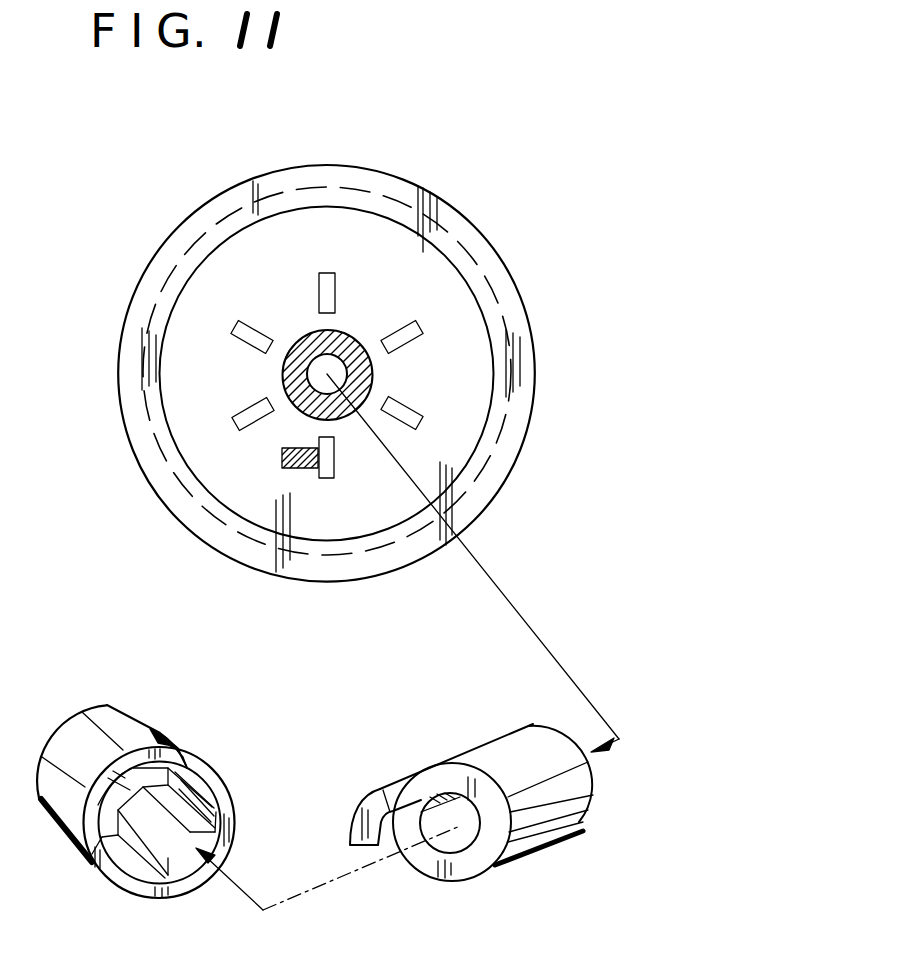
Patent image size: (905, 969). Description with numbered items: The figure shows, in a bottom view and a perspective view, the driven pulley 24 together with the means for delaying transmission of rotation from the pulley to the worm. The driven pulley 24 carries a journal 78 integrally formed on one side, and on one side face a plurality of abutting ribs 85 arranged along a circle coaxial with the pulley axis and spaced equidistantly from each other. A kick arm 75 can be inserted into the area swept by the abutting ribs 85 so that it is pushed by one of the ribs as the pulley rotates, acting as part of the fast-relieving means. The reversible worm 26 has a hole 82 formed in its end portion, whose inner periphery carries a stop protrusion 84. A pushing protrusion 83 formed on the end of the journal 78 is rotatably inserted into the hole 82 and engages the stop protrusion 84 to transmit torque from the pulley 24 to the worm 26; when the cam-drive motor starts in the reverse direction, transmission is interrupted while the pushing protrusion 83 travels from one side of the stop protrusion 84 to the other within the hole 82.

The driven pulley 24 is at (496, 257).
The abutting ribs 85 is at (319, 303).
The journal 78 is at (358, 373).
The kick arm 75 is at (282, 460).
The reversible worm 26 is at (155, 727).
The hole 82 is at (116, 855).
The stop protrusion 84 is at (166, 832).
The pushing protrusion 83 is at (362, 815).